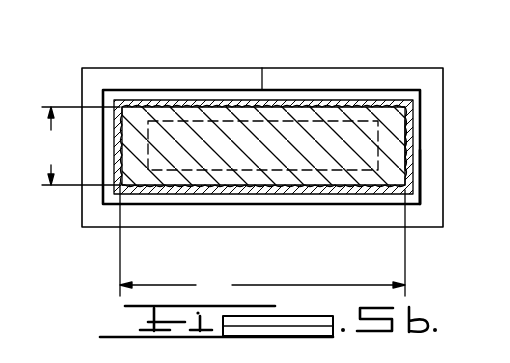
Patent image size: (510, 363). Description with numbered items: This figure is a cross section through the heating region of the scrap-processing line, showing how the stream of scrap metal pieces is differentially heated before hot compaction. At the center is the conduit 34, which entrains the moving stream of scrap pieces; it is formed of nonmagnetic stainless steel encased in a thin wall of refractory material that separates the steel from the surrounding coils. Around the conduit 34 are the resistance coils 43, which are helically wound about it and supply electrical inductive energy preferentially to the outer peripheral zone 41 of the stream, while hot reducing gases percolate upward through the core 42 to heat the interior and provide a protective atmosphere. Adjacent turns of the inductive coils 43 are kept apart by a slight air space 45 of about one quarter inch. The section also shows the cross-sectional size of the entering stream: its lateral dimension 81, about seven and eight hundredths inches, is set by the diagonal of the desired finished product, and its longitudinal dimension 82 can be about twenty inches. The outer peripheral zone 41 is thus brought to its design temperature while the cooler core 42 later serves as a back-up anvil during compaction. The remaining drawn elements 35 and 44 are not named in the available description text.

The conduit 34 is at (286, 104).
The wrapping layer side portion 35 is at (404, 142).
The outer peripheral zone 41 is at (341, 110).
The core 42 is at (268, 155).
The resistance coils 43 is at (168, 78).
The frame 44 is at (422, 91).
The air space 45 is at (420, 189).
The lateral dimension 81 is at (76, 146).
The longitudinal dimension 82 is at (262, 239).